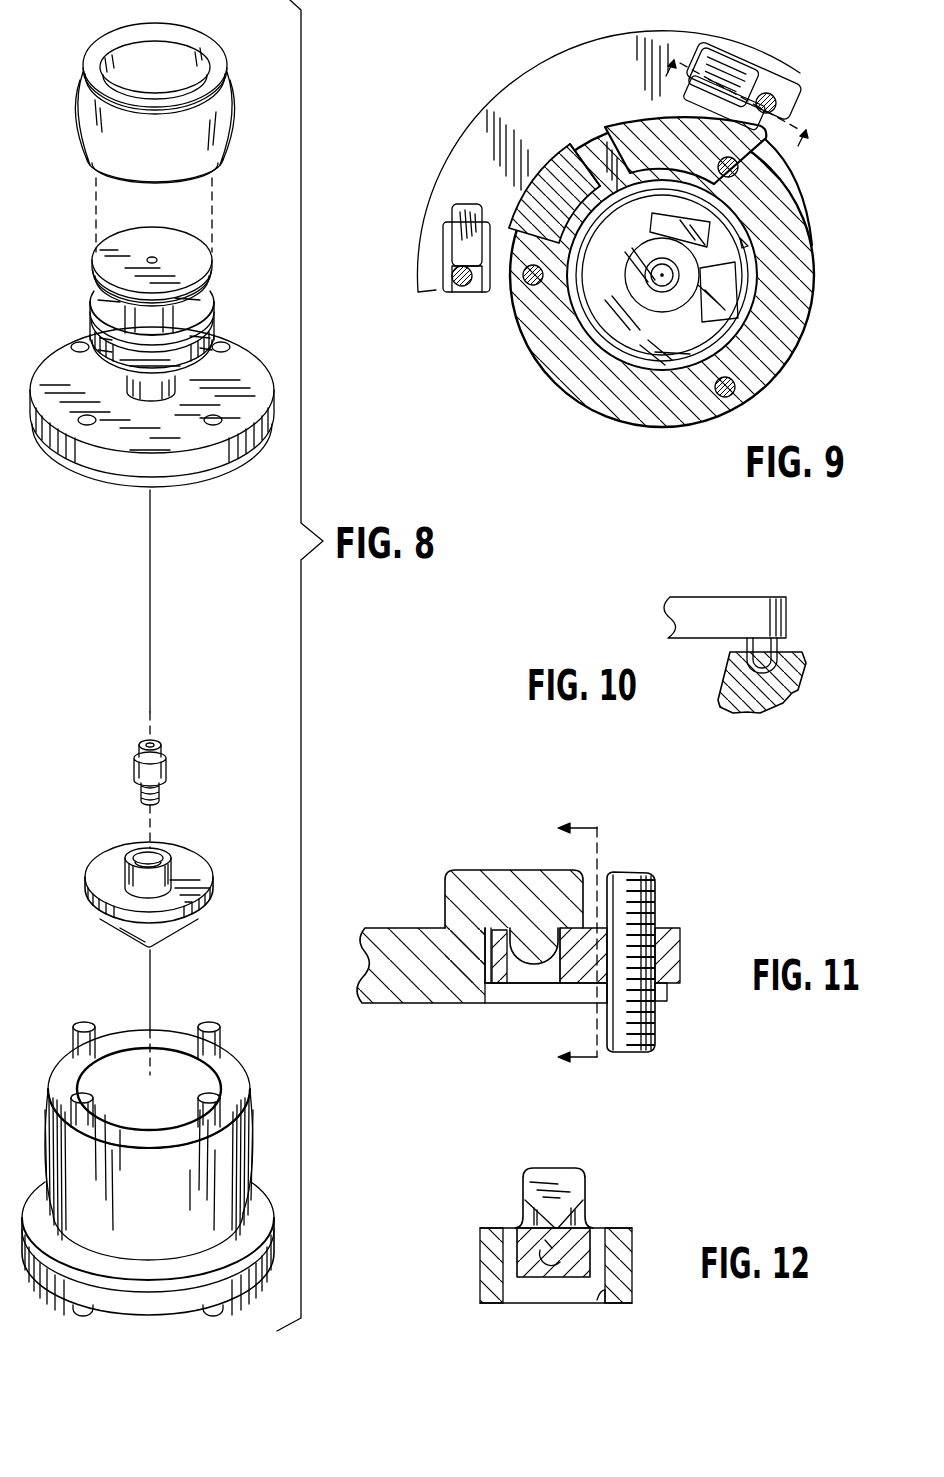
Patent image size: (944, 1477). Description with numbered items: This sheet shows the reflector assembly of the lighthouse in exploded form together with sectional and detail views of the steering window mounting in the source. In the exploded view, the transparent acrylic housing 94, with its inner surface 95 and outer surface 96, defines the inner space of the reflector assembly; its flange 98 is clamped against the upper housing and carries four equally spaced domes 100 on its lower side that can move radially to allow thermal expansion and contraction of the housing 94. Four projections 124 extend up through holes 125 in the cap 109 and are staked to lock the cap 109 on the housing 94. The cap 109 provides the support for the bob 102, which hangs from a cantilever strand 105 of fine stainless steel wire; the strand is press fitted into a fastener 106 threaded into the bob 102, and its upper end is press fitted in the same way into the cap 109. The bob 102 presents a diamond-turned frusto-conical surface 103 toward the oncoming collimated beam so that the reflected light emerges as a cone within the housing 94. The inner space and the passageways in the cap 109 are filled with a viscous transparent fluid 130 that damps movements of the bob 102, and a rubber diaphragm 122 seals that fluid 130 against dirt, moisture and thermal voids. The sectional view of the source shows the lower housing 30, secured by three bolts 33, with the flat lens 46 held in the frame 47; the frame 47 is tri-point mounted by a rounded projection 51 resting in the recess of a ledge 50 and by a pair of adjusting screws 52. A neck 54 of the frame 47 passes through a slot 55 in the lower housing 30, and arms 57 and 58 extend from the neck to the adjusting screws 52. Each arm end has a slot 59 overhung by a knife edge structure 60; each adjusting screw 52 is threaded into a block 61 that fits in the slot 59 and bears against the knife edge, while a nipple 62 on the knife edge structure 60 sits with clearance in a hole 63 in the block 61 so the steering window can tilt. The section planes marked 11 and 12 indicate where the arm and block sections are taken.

In FIG. 8, the rubber diaphragm 122 is at (232, 88).
In FIG. 8, the holes 125 is at (78, 342).
In FIG. 8, the transparent fluid 130 is at (126, 386).
In FIG. 8, the cap 109 is at (170, 466).
In FIG. 8, the cantilever strand 105 is at (151, 632).
In FIG. 8, the fastener 106 is at (168, 770).
In FIG. 8, the bob 102 is at (212, 892).
In FIG. 8, the frusto-conical surface 103 is at (167, 938).
In FIG. 8, the projections 124 is at (76, 1024).
In FIG. 8, the inner surface 95 is at (180, 1068).
In FIG. 8, the housing 94 is at (252, 1132).
In FIG. 8, the outer surface 96 is at (250, 1162).
In FIG. 8, the flange 98 is at (63, 1270).
In FIG. 8, the domes 100 is at (84, 1316).
In FIG. 9, the frame 47 is at (577, 44).
In FIG. 10, the frame 47 is at (717, 600).
In FIG. 9, the arm 57 is at (690, 33).
In FIG. 11, the arm 57 is at (385, 1005).
In FIG. 12, the arm 57 is at (480, 1253).
In FIG. 9, the arm 58 is at (441, 170).
In FIG. 9, the lower housing 30 is at (813, 258).
In FIG. 9, the flat lens 46 is at (620, 328).
In FIG. 9, the slot 55 is at (571, 158).
In FIG. 9, the neck 54 is at (596, 180).
In FIG. 9, the slot 59 is at (443, 295).
In FIG. 11, the slot 59 is at (497, 1002).
In FIG. 12, the slot 59 is at (598, 1302).
In FIG. 9, the knife edge structure 60 is at (453, 206).
In FIG. 11, the knife edge structure 60 is at (482, 870).
In FIG. 12, the knife edge structure 60 is at (555, 1168).
In FIG. 9, the adjusting screws 52 is at (462, 288).
In FIG. 11, the adjusting screws 52 is at (658, 890).
In FIG. 9, the bolts 33 is at (530, 285).
In FIG. 9, the section line 11- 11 is at (753, 89).
In FIG. 10, the ledge 50 is at (793, 652).
In FIG. 10, the rounded projection 51 is at (757, 665).
In FIG. 11, the block 61 is at (684, 962).
In FIG. 12, the block 61 is at (525, 1278).
In FIG. 11, the nipple 62 is at (535, 966).
In FIG. 12, the nipple 62 is at (580, 1220).
In FIG. 11, the hole 63 is at (515, 985).
In FIG. 11, the section line 12- 12 is at (562, 947).